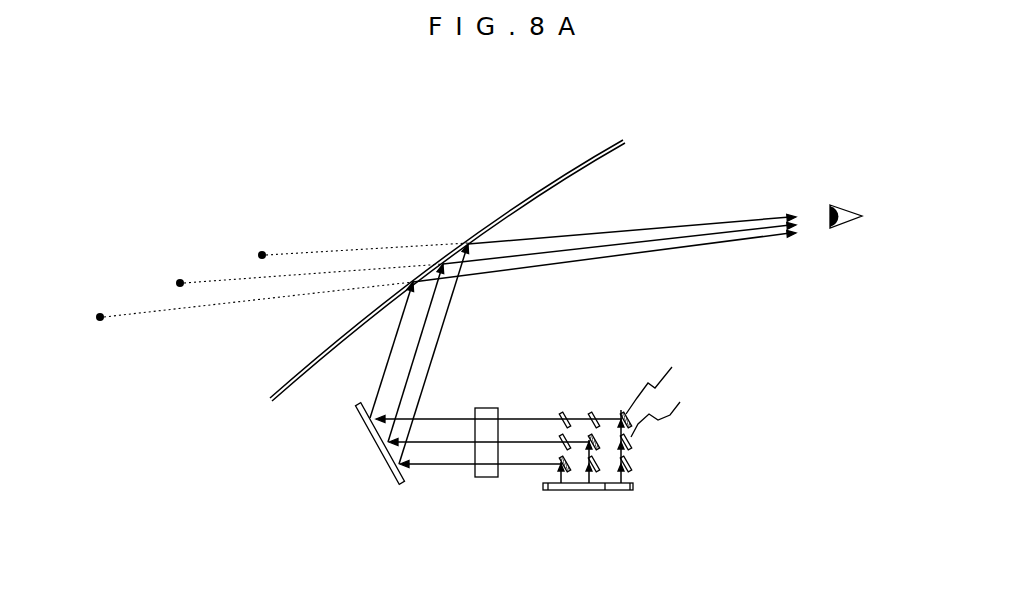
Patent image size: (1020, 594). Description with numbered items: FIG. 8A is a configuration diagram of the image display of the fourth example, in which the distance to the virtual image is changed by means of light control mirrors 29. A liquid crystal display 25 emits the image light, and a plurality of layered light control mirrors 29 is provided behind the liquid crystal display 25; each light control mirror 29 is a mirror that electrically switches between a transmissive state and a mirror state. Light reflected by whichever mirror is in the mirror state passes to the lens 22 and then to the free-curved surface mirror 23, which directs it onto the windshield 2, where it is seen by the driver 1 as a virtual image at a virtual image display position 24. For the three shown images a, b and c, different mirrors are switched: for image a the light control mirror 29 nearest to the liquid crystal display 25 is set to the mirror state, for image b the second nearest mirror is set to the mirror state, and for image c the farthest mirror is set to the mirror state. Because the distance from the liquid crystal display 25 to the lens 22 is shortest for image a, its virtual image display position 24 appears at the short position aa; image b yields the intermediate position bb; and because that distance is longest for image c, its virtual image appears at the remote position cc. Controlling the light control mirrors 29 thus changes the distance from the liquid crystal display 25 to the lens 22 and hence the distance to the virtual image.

The driver 1 is at (892, 203).
The windshield 2 is at (470, 270).
The lens 22 is at (465, 473).
The free-curved surface mirror 23 is at (365, 460).
The virtual image display position 24 is at (260, 265).
The liquid crystal display 25 is at (588, 536).
The light control mirrors 29 is at (680, 413).
The image a is at (533, 515).
The image b is at (626, 511).
The image c is at (657, 505).
The short virtual image display position aa is at (349, 254).
The intermediate virtual image display position bb is at (295, 279).
The remote virtual image display position cc is at (242, 305).